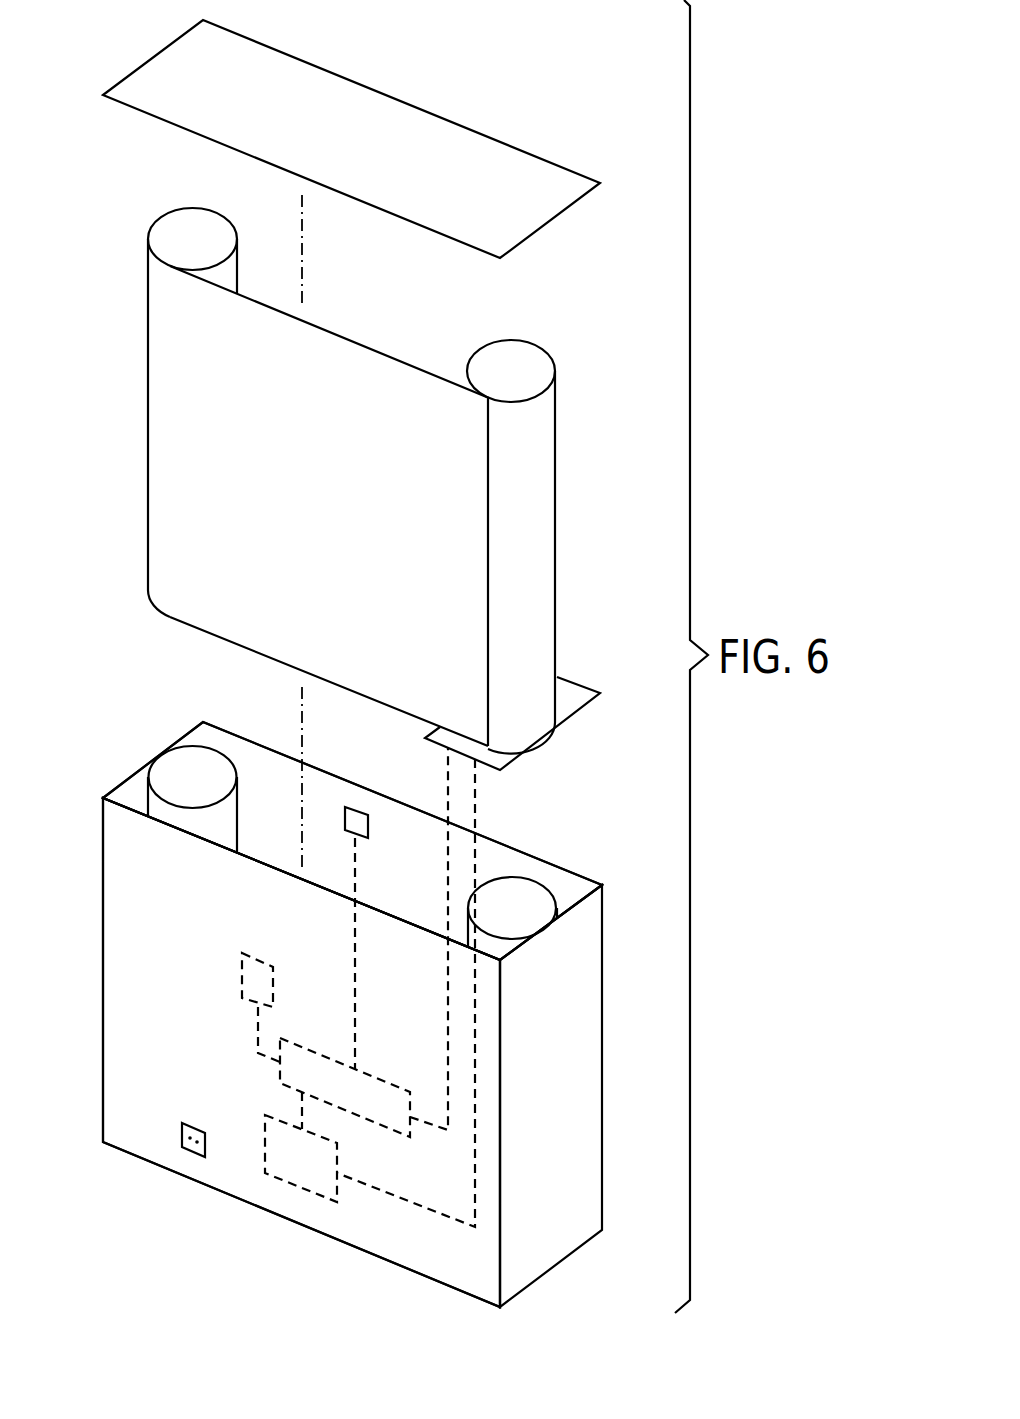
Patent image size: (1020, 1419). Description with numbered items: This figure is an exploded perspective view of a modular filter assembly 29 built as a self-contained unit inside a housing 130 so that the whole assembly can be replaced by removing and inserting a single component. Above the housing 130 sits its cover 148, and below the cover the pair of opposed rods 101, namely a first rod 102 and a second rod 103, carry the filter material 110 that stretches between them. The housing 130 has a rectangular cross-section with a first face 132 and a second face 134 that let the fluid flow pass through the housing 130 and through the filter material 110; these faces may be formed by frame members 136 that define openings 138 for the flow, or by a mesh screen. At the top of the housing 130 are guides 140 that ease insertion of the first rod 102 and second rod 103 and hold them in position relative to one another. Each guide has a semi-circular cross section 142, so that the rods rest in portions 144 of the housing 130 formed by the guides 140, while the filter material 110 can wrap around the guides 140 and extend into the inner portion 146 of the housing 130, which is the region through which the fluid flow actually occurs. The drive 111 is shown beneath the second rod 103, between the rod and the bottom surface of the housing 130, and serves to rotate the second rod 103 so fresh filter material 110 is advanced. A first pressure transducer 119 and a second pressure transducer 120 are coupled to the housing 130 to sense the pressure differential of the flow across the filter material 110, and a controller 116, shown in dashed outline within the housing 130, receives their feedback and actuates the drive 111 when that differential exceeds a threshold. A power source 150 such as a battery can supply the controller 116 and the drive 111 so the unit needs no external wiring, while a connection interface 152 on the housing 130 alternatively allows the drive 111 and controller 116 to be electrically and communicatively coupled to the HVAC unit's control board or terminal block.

The electrochemical cell 29 is at (558, 115).
The pair of opposed rods 101 is at (180, 200).
The first rod 102 is at (170, 243).
The second rod 103 is at (510, 340).
The filter material 110 is at (350, 390).
The drive 111 is at (570, 720).
The controller 116 is at (367, 1120).
The first pressure transducer 119 is at (240, 960).
The second pressure transducer 120 is at (340, 822).
The housing 130 is at (87, 942).
The first face 132 is at (135, 1036).
The second face 134 is at (368, 889).
The frame members 136 is at (273, 752).
The openings 138 is at (547, 842).
The guides 140 is at (217, 797).
The semi-circular cross section 142 is at (467, 885).
The portions 144 is at (173, 787).
The inner portion 146 is at (318, 805).
The cover 148 is at (400, 112).
The power source 150 is at (300, 1190).
The connection interface 152 is at (190, 1158).